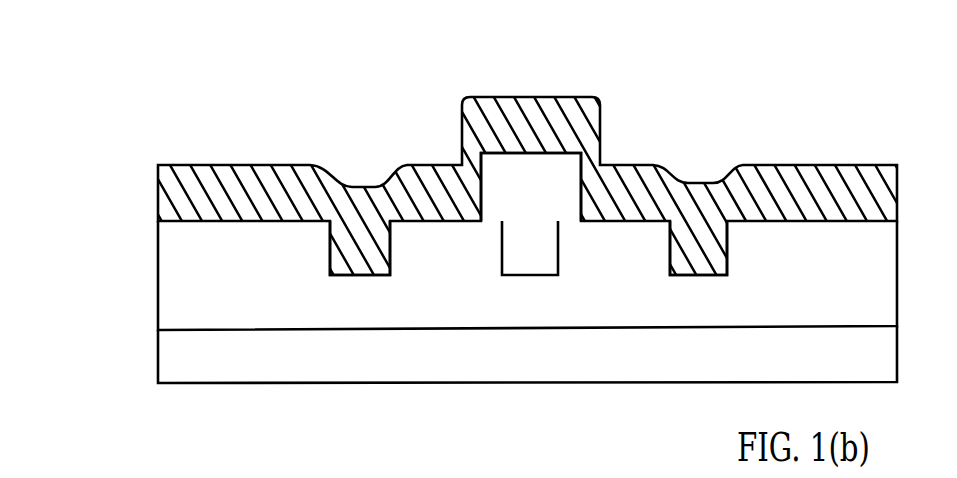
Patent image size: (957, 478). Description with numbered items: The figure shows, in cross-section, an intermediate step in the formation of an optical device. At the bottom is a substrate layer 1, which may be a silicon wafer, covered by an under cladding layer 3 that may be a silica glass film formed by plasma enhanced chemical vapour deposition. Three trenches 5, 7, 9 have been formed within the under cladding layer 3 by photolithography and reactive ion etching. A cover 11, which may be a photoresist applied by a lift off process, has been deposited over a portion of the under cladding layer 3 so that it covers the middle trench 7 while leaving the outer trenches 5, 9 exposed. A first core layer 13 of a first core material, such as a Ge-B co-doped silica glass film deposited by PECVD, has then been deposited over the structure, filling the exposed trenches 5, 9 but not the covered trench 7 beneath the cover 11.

The substrate layer 1 is at (148, 363).
The under cladding layer 3 is at (148, 290).
The trench 5 is at (358, 278).
The trench 7 is at (530, 278).
The trench 9 is at (698, 278).
The cover 11 is at (530, 185).
The first core layer 13 is at (148, 193).